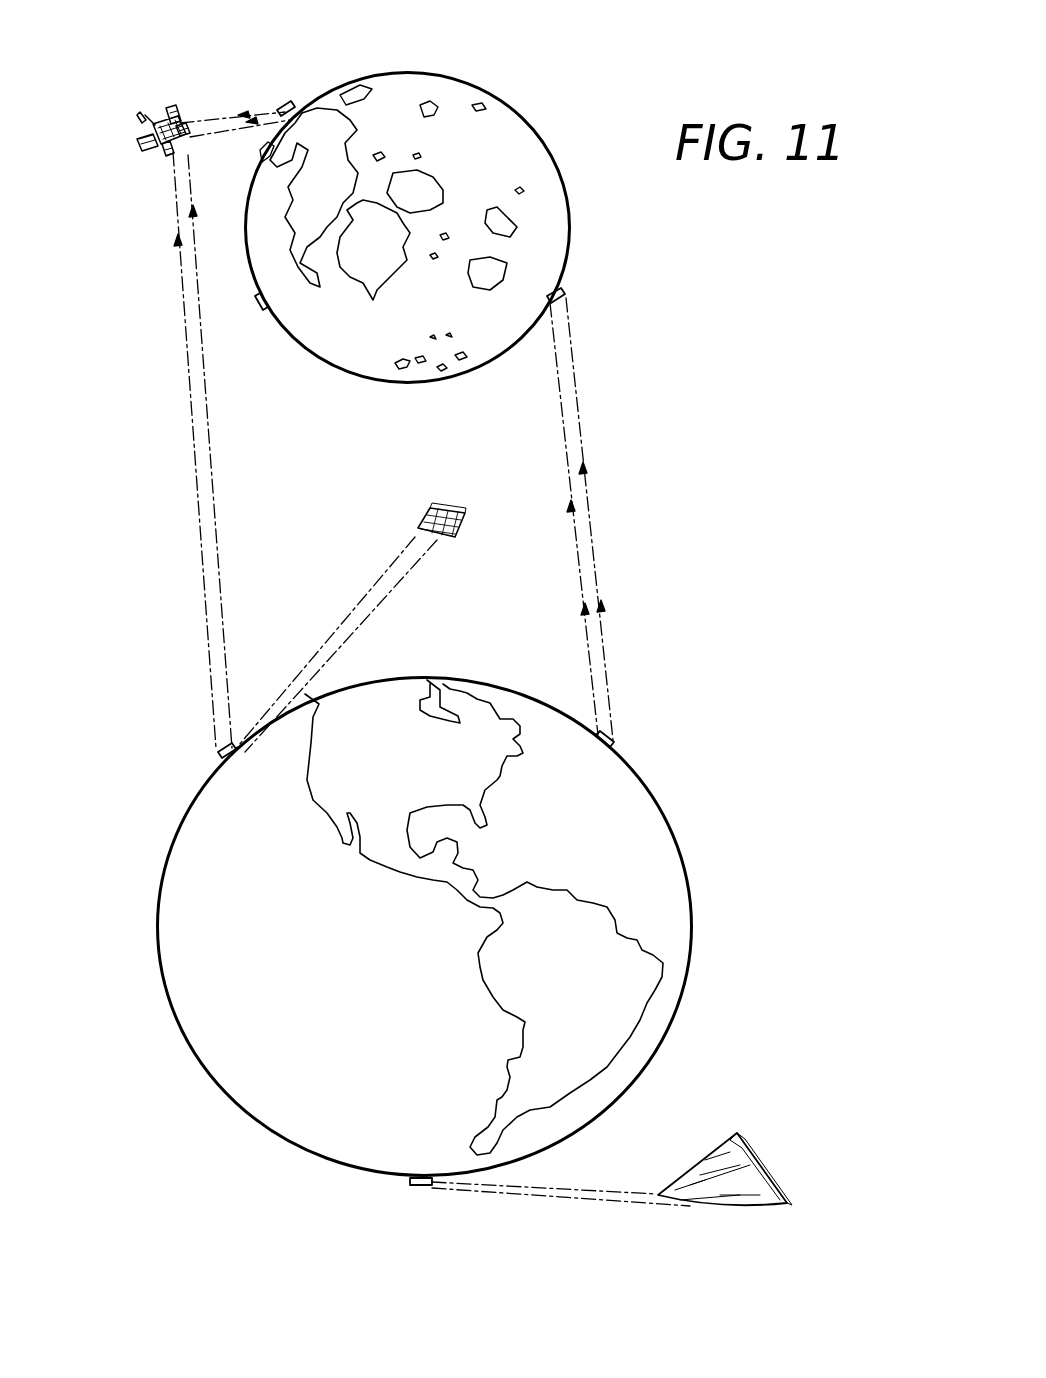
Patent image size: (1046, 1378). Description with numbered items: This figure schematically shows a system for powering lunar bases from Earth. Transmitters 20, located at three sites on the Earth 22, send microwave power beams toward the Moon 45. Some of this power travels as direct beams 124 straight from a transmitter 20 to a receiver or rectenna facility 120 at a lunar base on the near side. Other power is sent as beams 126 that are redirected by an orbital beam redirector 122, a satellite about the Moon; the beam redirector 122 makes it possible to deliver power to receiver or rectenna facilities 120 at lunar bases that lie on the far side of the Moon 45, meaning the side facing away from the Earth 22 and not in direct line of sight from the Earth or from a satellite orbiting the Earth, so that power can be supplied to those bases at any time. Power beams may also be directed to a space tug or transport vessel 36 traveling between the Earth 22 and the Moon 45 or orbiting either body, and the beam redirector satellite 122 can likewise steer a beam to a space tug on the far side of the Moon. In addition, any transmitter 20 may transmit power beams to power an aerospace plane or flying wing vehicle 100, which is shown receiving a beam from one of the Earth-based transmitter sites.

The Moon 45 is at (566, 189).
The Earth 22 is at (692, 938).
The orbital beam redirector 122 is at (143, 140).
The space tug or transport vessel 36 is at (426, 513).
The aerospace plane or flying wing vehicle 100 is at (728, 1140).
The redirected beam 126 is at (222, 112).
The direct beam 124 is at (596, 532).
The lunar base receiver or rectenna facility 120 is at (291, 76).
The transmitter 20 is at (216, 761).